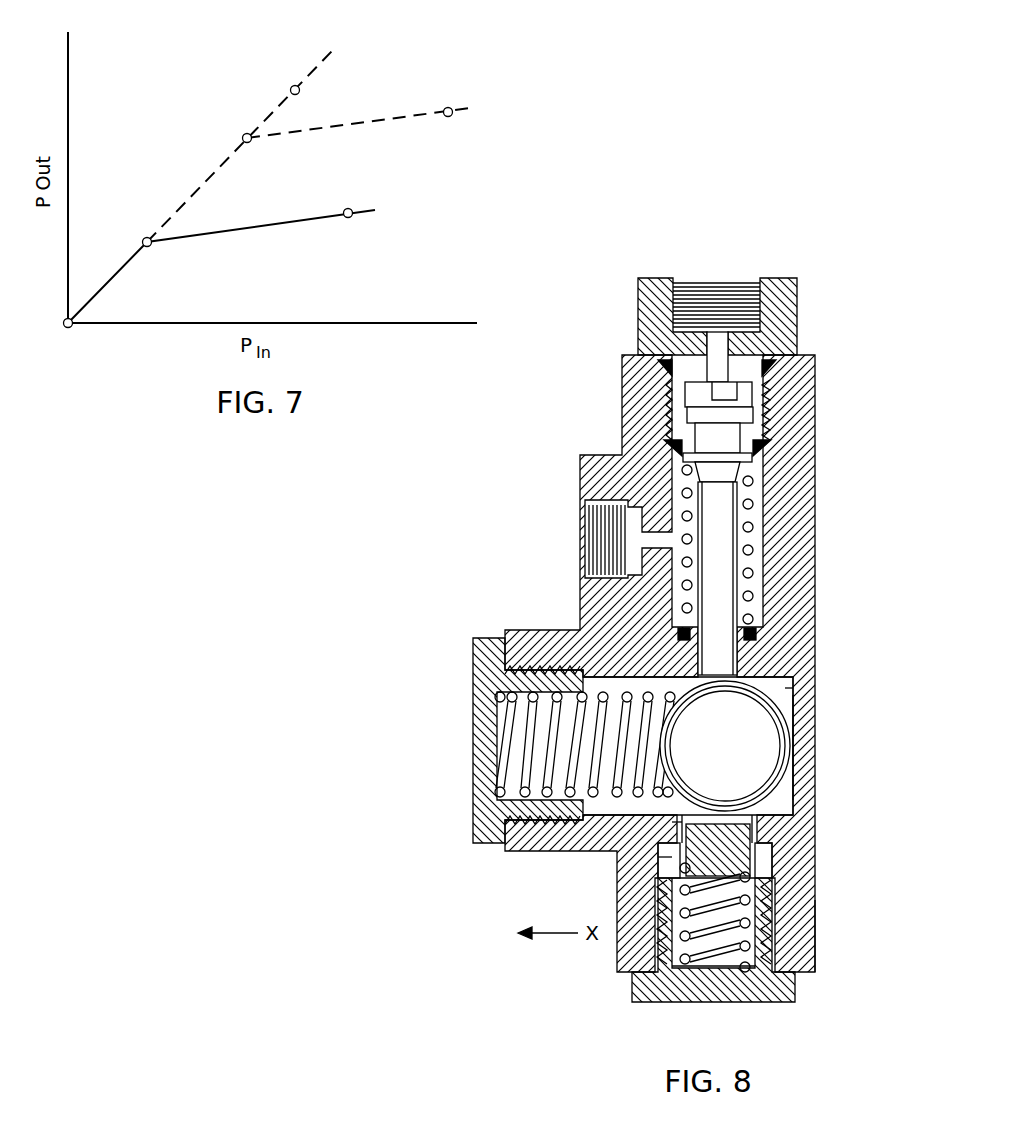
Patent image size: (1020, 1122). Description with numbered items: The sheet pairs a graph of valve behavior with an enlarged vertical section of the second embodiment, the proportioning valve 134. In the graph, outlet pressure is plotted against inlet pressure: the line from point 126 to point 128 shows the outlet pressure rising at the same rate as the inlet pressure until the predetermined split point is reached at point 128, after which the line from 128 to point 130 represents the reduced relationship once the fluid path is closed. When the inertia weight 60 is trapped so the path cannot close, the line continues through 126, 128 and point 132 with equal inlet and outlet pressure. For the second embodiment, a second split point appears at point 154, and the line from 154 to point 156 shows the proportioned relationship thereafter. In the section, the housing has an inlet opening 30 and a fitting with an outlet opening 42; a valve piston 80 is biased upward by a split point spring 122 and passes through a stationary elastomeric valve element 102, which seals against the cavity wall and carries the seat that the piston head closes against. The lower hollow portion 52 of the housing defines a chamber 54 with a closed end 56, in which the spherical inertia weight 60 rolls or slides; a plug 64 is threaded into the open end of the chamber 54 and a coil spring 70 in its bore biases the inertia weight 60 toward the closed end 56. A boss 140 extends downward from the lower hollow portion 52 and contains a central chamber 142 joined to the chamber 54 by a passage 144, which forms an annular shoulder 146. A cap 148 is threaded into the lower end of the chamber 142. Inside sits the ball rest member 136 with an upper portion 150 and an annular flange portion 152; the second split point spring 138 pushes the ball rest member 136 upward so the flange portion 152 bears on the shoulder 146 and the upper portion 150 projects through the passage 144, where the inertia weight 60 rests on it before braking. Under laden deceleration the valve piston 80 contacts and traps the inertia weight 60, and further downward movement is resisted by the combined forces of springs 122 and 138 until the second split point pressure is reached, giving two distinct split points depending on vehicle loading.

In FIG. 7, the origin point of pressure curve 126 is at (68, 328).
In FIG. 7, the first split point 128 is at (148, 247).
In FIG. 7, the proportioned outlet pressure point 130 is at (348, 218).
In FIG. 7, the full-range pressure point 132 is at (290, 90).
In FIG. 7, the second split point 154 is at (248, 143).
In FIG. 7, the second proportioned pressure point 156 is at (447, 117).
In FIG. 8, the proportioning valve 134 is at (816, 288).
In FIG. 8, the outlet opening 42 is at (748, 288).
In FIG. 8, the valve element 102 is at (766, 448).
In FIG. 8, the split point spring 122 is at (753, 522).
In FIG. 8, the inlet opening 30 is at (598, 508).
In FIG. 8, the valve piston 80 is at (718, 503).
In FIG. 8, the chamber 54 is at (630, 680).
In FIG. 8, the closed end 56 is at (788, 690).
In FIG. 8, the lower hollow portion 52 is at (791, 708).
In FIG. 8, the coil spring 70 is at (513, 703).
In FIG. 8, the inertia weight 60 is at (725, 746).
In FIG. 8, the plug 64 is at (485, 842).
In FIG. 8, the upper portion 150 is at (758, 821).
In FIG. 8, the passage 144 is at (668, 830).
In FIG. 8, the annular shoulder 146 is at (668, 857).
In FIG. 8, the ball rest member 136 is at (718, 850).
In FIG. 8, the annular flange portion 152 is at (775, 857).
In FIG. 8, the second split point spring 138 is at (748, 920).
In FIG. 8, the boss 140 is at (803, 953).
In FIG. 8, the central chamber 142 is at (730, 960).
In FIG. 8, the cap 148 is at (773, 993).